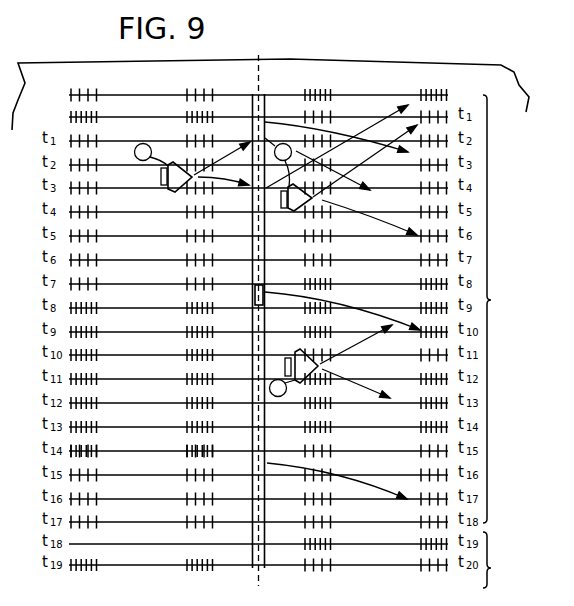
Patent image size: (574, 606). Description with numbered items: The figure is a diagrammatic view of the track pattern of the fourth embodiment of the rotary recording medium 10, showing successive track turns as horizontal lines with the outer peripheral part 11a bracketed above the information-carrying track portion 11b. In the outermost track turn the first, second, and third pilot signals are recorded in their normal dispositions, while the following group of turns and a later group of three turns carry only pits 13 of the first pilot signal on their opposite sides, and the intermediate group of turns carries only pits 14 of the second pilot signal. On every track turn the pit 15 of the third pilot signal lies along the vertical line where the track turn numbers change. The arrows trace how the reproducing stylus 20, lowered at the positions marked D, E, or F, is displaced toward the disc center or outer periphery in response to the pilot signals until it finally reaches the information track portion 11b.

The rotary recording medium 10 is at (103, 51).
The outer peripheral part of the track 11a is at (505, 309).
The track portion 11b is at (505, 560).
The pits of the first pilot signal 13 is at (332, 114).
The pits of the second pilot signal 14 is at (331, 95).
The pit of the third pilot signal 15 is at (265, 100).
The reproducing stylus 20 is at (292, 211).